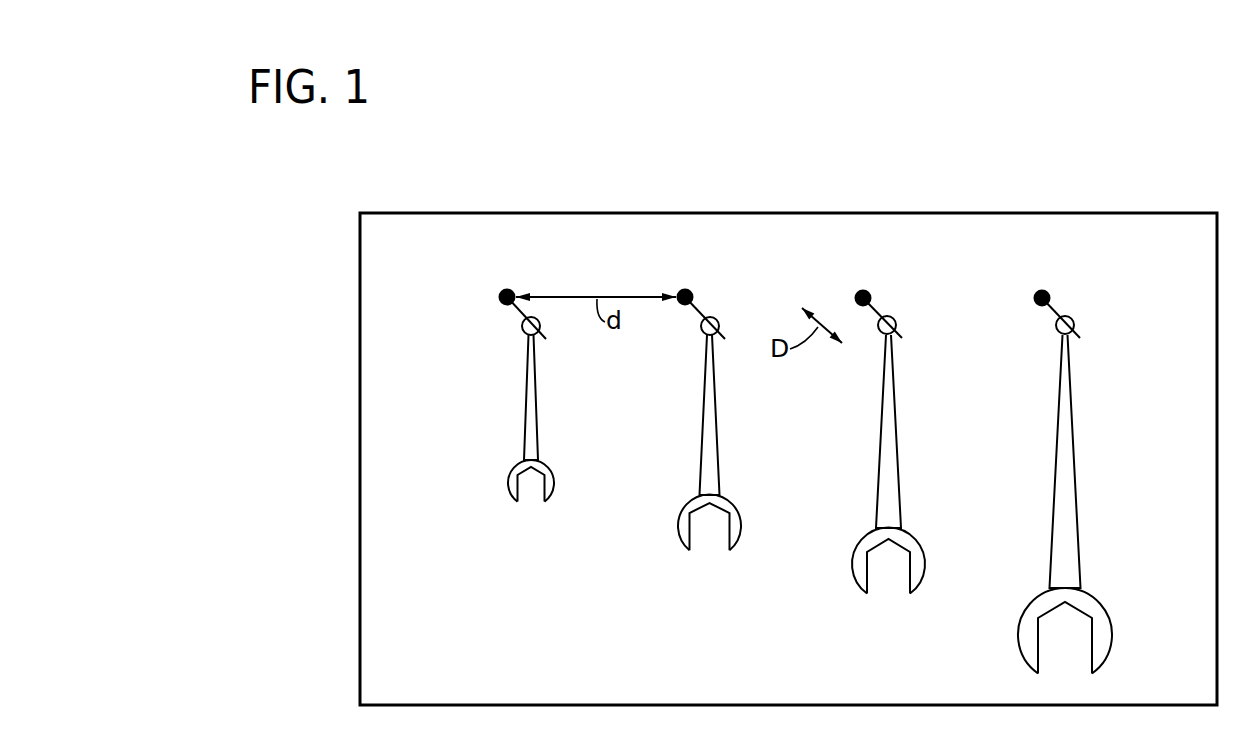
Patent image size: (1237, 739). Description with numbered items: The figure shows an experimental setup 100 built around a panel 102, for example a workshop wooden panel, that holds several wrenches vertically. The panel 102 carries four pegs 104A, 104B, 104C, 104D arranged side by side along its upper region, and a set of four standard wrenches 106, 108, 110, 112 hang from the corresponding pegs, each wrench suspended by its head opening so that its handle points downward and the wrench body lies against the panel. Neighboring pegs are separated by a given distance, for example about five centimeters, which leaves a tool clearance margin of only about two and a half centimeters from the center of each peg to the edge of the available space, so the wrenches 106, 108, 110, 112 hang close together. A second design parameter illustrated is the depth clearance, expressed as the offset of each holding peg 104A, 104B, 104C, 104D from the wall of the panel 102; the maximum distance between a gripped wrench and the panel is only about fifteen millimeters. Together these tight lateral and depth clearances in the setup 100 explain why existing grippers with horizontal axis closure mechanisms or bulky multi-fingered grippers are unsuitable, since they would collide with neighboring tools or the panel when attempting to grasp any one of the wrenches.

The experimental setup 100 is at (716, 110).
The panel 102 is at (982, 240).
The peg 104A is at (507, 289).
The peg 104B is at (685, 289).
The peg 104C is at (863, 290).
The peg 104D is at (1042, 290).
The wrench 106 is at (528, 379).
The wrench 108 is at (703, 408).
The wrench 110 is at (880, 425).
The wrench 112 is at (1053, 444).